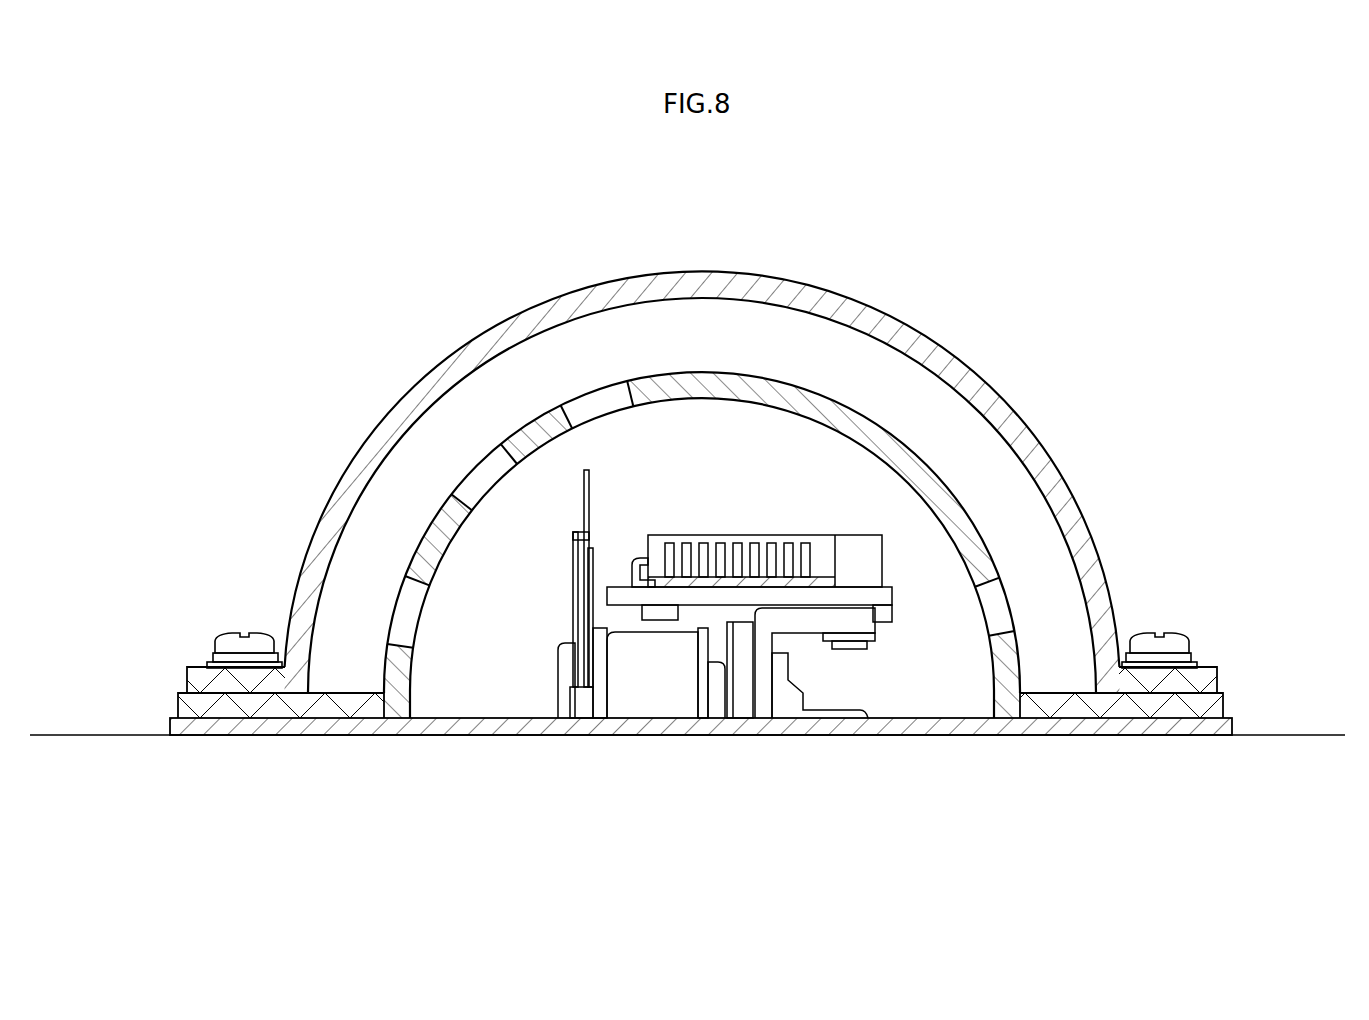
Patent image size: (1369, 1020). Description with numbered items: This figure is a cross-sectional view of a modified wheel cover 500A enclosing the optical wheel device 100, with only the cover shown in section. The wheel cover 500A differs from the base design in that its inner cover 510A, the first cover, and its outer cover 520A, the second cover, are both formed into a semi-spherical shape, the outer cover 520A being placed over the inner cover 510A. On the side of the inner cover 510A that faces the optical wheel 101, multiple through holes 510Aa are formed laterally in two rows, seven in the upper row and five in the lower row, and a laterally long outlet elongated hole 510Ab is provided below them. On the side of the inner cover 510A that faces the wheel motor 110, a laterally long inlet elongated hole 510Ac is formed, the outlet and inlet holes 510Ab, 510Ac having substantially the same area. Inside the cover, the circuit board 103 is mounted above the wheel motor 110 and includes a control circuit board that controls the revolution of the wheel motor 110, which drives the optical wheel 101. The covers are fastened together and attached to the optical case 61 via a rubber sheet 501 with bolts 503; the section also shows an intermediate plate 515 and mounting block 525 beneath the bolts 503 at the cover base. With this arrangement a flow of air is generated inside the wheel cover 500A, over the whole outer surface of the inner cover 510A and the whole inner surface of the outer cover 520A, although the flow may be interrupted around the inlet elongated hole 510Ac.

The optical wheel device 100 is at (935, 225).
The wheel cover 500A is at (987, 312).
The outer cover 520A is at (1018, 403).
The inner cover 510A is at (983, 513).
The through holes 510Aa is at (597, 405).
The outlet elongated hole 510Ab is at (400, 610).
The inlet elongated hole 510Ac is at (992, 610).
The rubber sheet 501 is at (183, 728).
The intermediate plate 515 is at (197, 708).
The mounting block 525 is at (207, 682).
The bolts 503 is at (225, 648).
The optical wheel 101 is at (590, 490).
The circuit board 103 is at (822, 598).
The wheel motor 110 is at (668, 687).
The optical case 61 is at (1295, 780).